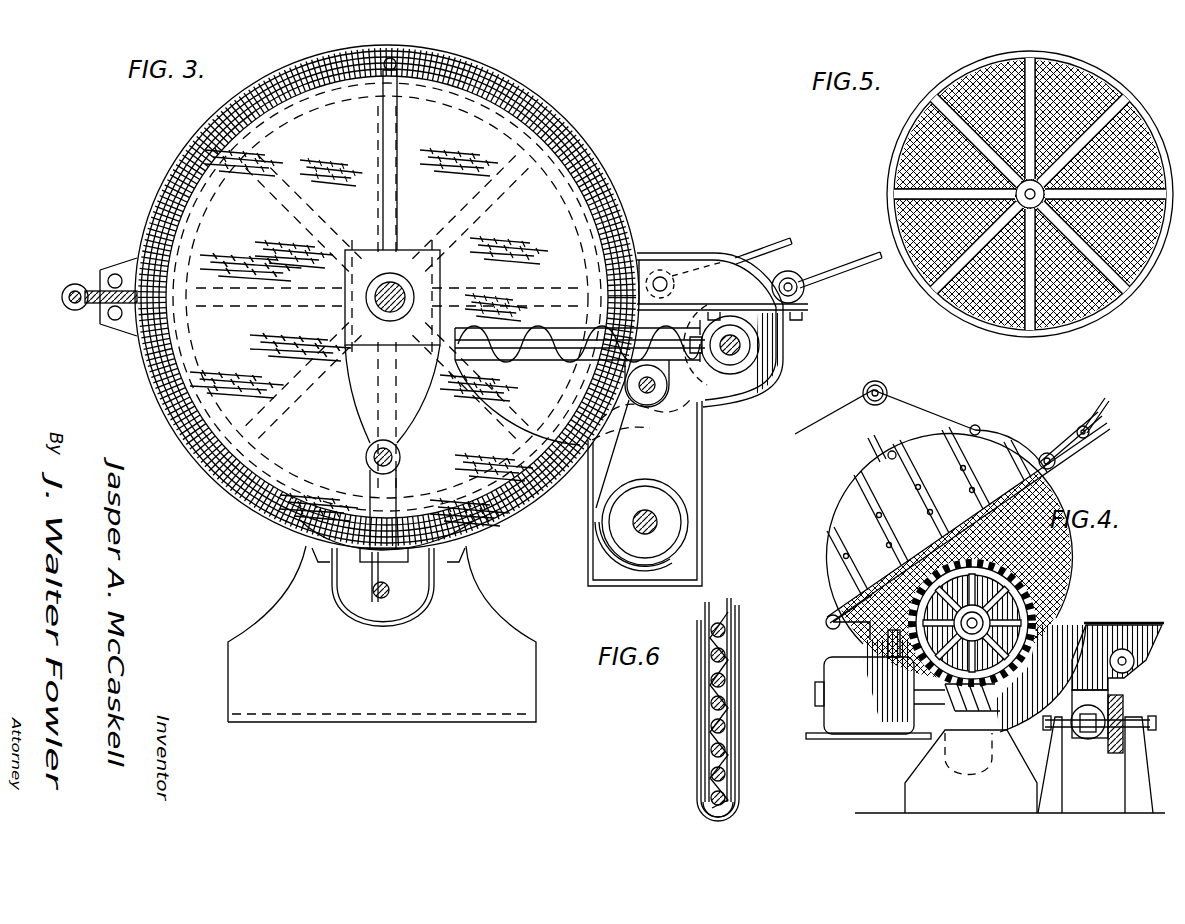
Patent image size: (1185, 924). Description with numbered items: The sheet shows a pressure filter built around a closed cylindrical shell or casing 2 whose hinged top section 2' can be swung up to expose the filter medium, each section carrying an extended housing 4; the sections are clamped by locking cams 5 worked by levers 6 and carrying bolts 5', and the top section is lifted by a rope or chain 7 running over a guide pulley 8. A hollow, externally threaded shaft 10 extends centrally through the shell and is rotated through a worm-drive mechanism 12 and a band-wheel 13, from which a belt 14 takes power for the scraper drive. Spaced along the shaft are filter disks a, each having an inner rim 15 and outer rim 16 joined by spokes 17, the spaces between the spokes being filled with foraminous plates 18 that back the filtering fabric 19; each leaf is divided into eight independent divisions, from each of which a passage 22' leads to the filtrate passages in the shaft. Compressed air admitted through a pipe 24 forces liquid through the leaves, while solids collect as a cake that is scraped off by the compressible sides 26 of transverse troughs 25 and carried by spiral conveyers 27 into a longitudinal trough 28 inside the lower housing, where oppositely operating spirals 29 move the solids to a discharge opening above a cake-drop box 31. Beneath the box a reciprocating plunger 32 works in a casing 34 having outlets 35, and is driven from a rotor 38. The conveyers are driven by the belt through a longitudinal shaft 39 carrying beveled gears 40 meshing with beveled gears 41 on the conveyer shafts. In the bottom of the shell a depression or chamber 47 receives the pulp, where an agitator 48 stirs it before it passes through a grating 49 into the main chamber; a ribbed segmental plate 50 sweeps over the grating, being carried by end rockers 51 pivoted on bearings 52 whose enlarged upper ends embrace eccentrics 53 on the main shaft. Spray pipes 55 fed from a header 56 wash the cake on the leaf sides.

In FIG. 4, the shell or casing 2 is at (1027, 729).
In FIG. 3, the top section of the shell 2' is at (387, 297).
In FIG. 4, the top section of the shell 2' is at (952, 579).
In FIG. 3, the extended housing 4 is at (668, 256).
In FIG. 4, the extended housing 4 is at (1058, 466).
In FIG. 3, the locking cam 5 is at (791, 275).
In FIG. 4, the locking cam 5 is at (1065, 440).
In FIG. 3, the bolt 5' is at (826, 309).
In FIG. 3, the lever 6 is at (772, 256).
In FIG. 4, the lever 6 is at (1058, 432).
In FIG. 3, the rope or chain 7 is at (173, 405).
In FIG. 4, the rope or chain 7 is at (925, 408).
In FIG. 4, the guide pulley 8 is at (875, 405).
In FIG. 3, the hollow shaft 10 is at (372, 310).
In FIG. 4, the worm-drive mechanism 12 is at (912, 698).
In FIG. 4, the band-wheel 13 is at (1050, 600).
In FIG. 4, the belt 14 is at (1058, 625).
In FIG. 5, the inner rim 15 is at (920, 265).
In FIG. 3, the outer rim 16 is at (340, 100).
In FIG. 6, the outer rim 16 is at (700, 802).
In FIG. 5, the outer rim 16 is at (1066, 328).
In FIG. 3, the spoke 17 is at (548, 185).
In FIG. 6, the spoke 17 is at (703, 608).
In FIG. 5, the spoke 17 is at (898, 175).
In FIG. 6, the foraminous plate 18 is at (730, 690).
In FIG. 5, the foraminous plate 18 is at (972, 86).
In FIG. 3, the filtering fabric 19 is at (578, 200).
In FIG. 6, the filtering fabric 19 is at (700, 730).
In FIG. 4, the filtering fabric 19 is at (1040, 565).
In FIG. 5, the passage 22' is at (1131, 71).
In FIG. 4, the pipe 24 is at (868, 450).
In FIG. 3, the trough 25 is at (520, 372).
In FIG. 3, the compressible side 26 is at (482, 326).
In FIG. 3, the spiral conveyer 27 is at (530, 328).
In FIG. 3, the longitudinal trough 28 is at (656, 392).
In FIG. 3, the oppositely operating spiral 29 is at (667, 425).
In FIG. 3, the cake-drop box 31 is at (704, 470).
In FIG. 4, the cake-drop box 31 is at (1092, 712).
In FIG. 3, the reciprocating plunger 32 is at (670, 526).
In FIG. 4, the casing 34 is at (1123, 712).
In FIG. 3, the outlet 35 is at (700, 560).
In FIG. 4, the rotor 38 is at (1112, 740).
In FIG. 3, the longitudinal shaft 39 is at (740, 347).
In FIG. 4, the longitudinal shaft 39 is at (1126, 649).
In FIG. 3, the beveled gear 40 is at (752, 345).
In FIG. 3, the beveled gear 41 is at (745, 398).
In FIG. 3, the depression or chamber 47 is at (432, 606).
In FIG. 4, the depression or chamber 47 is at (950, 775).
In FIG. 3, the agitator 48 is at (374, 596).
In FIG. 3, the grating 49 is at (392, 560).
In FIG. 3, the segmental plate 50 is at (270, 520).
In FIG. 3, the end rocker 51 is at (378, 420).
In FIG. 3, the bearing 52 is at (400, 455).
In FIG. 3, the eccentric 53 is at (412, 290).
In FIG. 3, the spray pipe 55 is at (398, 148).
In FIG. 3, the header 56 is at (400, 62).
In FIG. 3, the filter disk a is at (195, 400).
In FIG. 4, the filter disk a is at (985, 540).